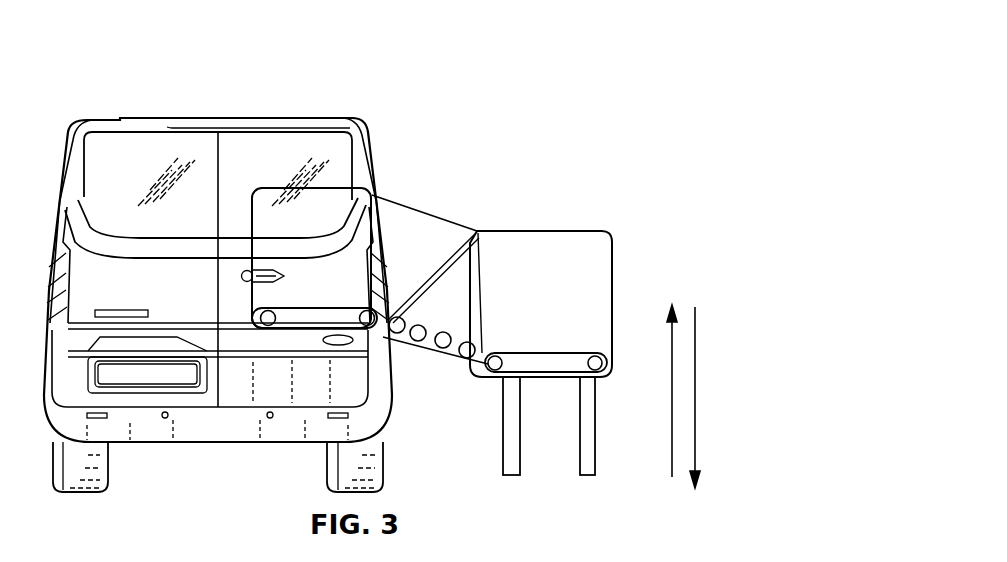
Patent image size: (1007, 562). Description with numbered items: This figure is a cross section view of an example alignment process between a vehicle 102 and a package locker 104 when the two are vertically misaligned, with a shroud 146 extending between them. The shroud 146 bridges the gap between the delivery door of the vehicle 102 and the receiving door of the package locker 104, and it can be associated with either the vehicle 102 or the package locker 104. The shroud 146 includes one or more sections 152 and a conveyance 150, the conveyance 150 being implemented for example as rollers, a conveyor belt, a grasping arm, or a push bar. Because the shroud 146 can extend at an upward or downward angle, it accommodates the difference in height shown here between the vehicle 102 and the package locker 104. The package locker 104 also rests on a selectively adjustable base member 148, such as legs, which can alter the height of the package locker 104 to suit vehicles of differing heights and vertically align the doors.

The vehicle 102 is at (275, 120).
The package locker 104 is at (604, 280).
The shroud 146 is at (521, 45).
The selectively adjustable base member 148 is at (590, 434).
The conveyance 150 is at (422, 348).
The sections 152 is at (420, 221).